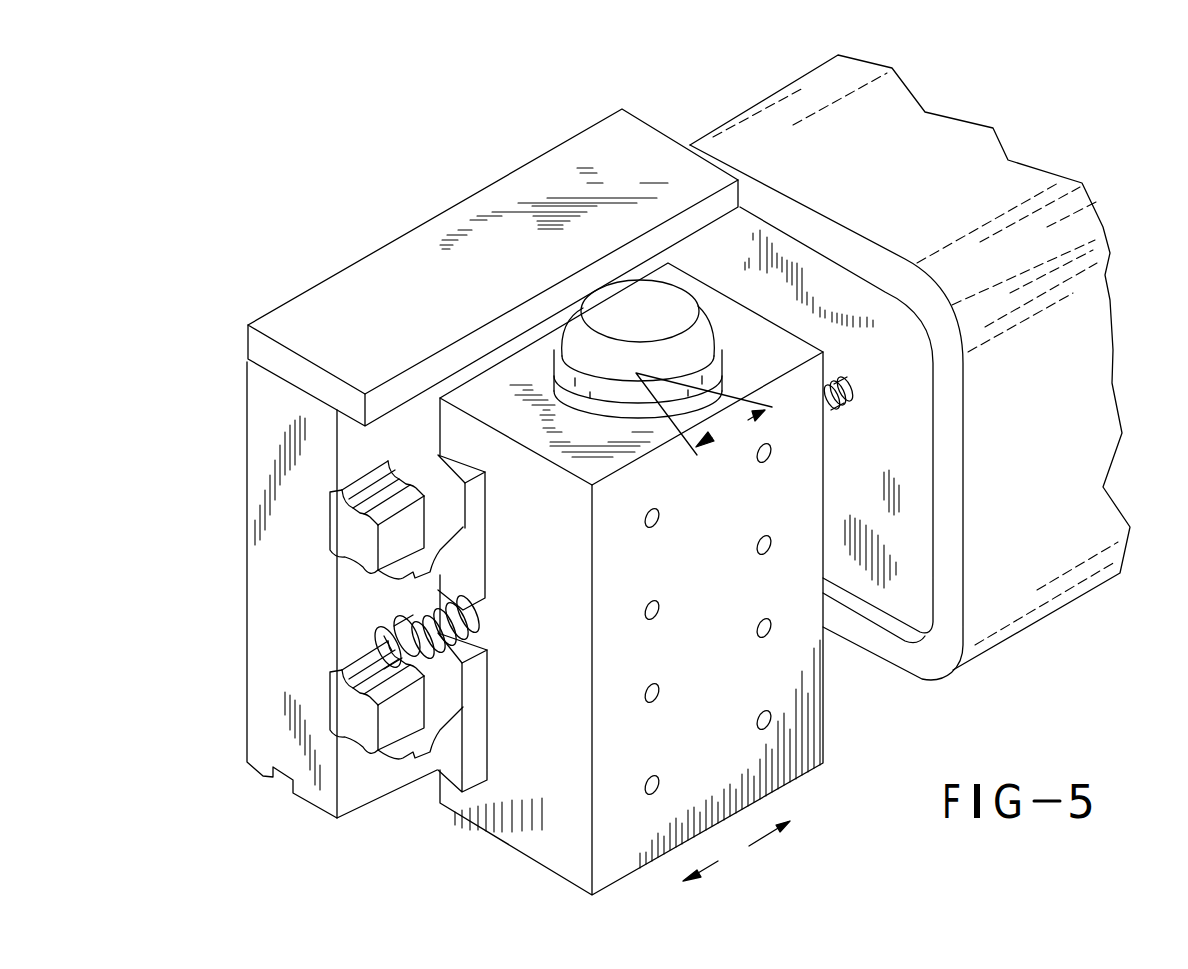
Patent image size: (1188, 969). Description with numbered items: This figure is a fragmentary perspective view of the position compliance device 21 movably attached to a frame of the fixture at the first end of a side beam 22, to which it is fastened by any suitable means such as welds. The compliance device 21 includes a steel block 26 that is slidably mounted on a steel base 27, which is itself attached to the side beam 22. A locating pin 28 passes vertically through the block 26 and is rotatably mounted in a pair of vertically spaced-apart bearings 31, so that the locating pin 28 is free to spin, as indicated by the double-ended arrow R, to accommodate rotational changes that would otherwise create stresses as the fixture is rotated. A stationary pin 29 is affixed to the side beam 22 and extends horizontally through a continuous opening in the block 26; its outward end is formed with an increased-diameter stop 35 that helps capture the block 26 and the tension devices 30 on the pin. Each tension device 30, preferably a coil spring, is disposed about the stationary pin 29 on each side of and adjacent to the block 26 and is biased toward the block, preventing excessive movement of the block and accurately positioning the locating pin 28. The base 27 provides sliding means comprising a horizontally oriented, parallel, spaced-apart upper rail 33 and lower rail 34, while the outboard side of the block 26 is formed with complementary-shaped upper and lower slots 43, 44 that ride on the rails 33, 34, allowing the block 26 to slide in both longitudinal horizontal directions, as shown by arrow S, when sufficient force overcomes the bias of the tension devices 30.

The compliance device 21 is at (366, 258).
The side beam 22 is at (1030, 627).
The block 26 is at (824, 712).
The base 27 is at (292, 666).
The locating pin 28 is at (602, 284).
The stationary pin 29 is at (846, 422).
The tension device 30 is at (849, 383).
The bearings 31 is at (716, 352).
The upper rail 33 is at (347, 538).
The lower rail 34 is at (347, 710).
The stop 35 is at (386, 634).
The upper slot 43 is at (480, 556).
The lower slot 44 is at (480, 735).